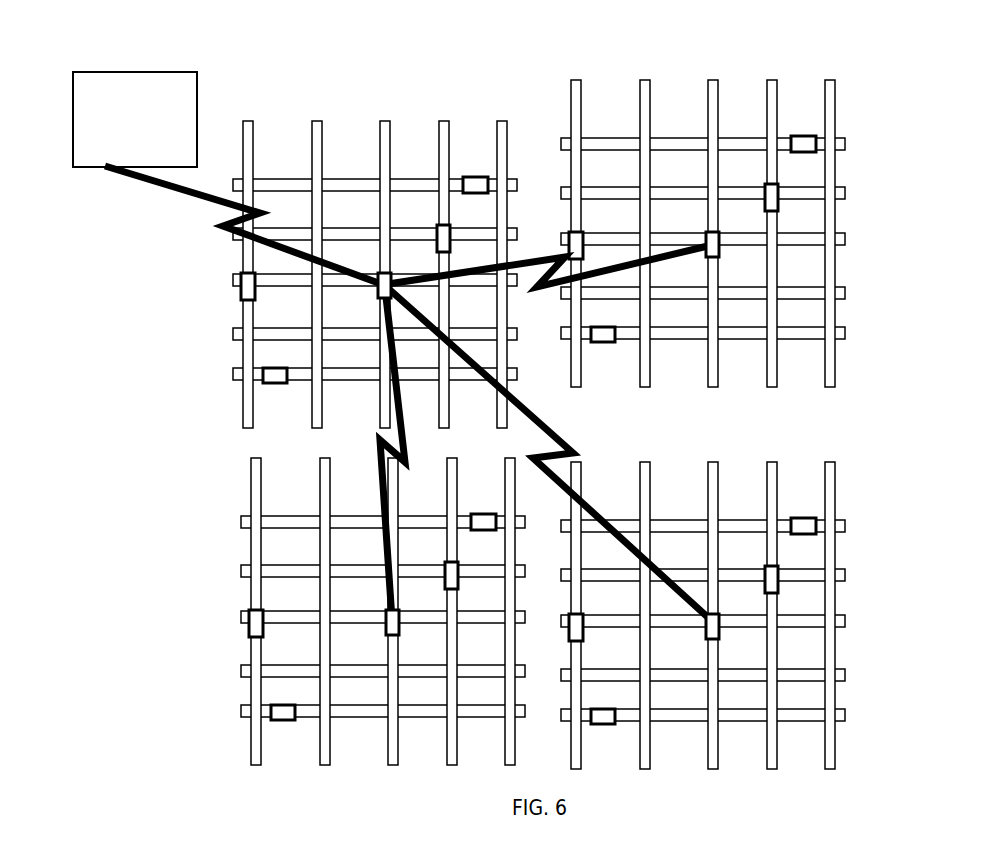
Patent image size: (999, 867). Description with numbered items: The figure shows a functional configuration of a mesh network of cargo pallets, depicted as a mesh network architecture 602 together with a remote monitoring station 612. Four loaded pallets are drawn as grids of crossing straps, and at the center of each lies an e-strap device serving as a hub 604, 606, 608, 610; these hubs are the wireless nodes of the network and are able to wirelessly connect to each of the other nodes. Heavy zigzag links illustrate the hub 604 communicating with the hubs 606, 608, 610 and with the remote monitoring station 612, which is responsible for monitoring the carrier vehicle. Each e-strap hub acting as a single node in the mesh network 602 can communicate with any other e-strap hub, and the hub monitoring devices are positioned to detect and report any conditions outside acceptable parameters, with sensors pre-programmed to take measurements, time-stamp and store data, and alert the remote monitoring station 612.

The mesh network architecture 602 is at (885, 608).
The hub 604 is at (375, 280).
The hub 606 is at (390, 610).
The hub 608 is at (700, 240).
The hub 610 is at (727, 612).
The remote monitoring station 612 is at (135, 119).